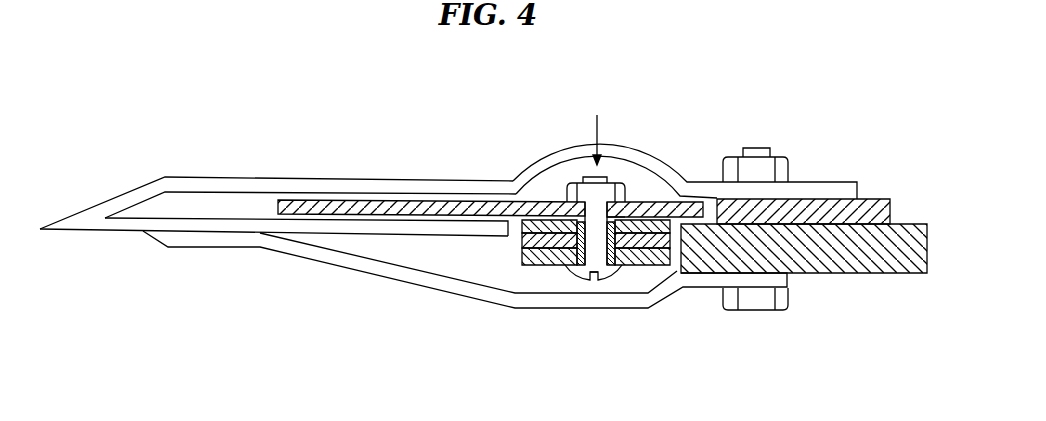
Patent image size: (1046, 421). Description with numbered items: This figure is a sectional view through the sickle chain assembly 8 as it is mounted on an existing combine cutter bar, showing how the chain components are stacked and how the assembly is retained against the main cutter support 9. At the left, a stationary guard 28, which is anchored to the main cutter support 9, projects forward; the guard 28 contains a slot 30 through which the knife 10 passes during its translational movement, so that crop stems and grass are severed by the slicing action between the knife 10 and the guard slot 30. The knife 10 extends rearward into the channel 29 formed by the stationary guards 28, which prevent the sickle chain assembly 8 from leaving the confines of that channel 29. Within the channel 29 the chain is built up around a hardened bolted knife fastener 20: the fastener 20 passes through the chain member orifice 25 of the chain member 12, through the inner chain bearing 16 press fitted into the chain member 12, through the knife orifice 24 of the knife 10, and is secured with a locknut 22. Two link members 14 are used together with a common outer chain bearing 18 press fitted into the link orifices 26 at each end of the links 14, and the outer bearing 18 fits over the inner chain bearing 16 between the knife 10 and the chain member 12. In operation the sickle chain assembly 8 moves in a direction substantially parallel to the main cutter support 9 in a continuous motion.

The sickle chain assembly 8 is at (596, 128).
The main cutter support 9 is at (813, 273).
The knife 10 is at (497, 203).
The chain member 12 is at (660, 283).
The link member 14 is at (520, 221).
The inner chain bearing 16 is at (563, 267).
The outer chain bearing 18 is at (545, 267).
The knife fastener 20 is at (597, 276).
The locknut 22 is at (613, 188).
The knife orifice 24 is at (570, 192).
The chain member orifice 25 is at (617, 267).
The link orifice 26 is at (622, 218).
The stationary guard 28 is at (127, 191).
The channel 29 is at (581, 288).
The slot 30 is at (265, 205).